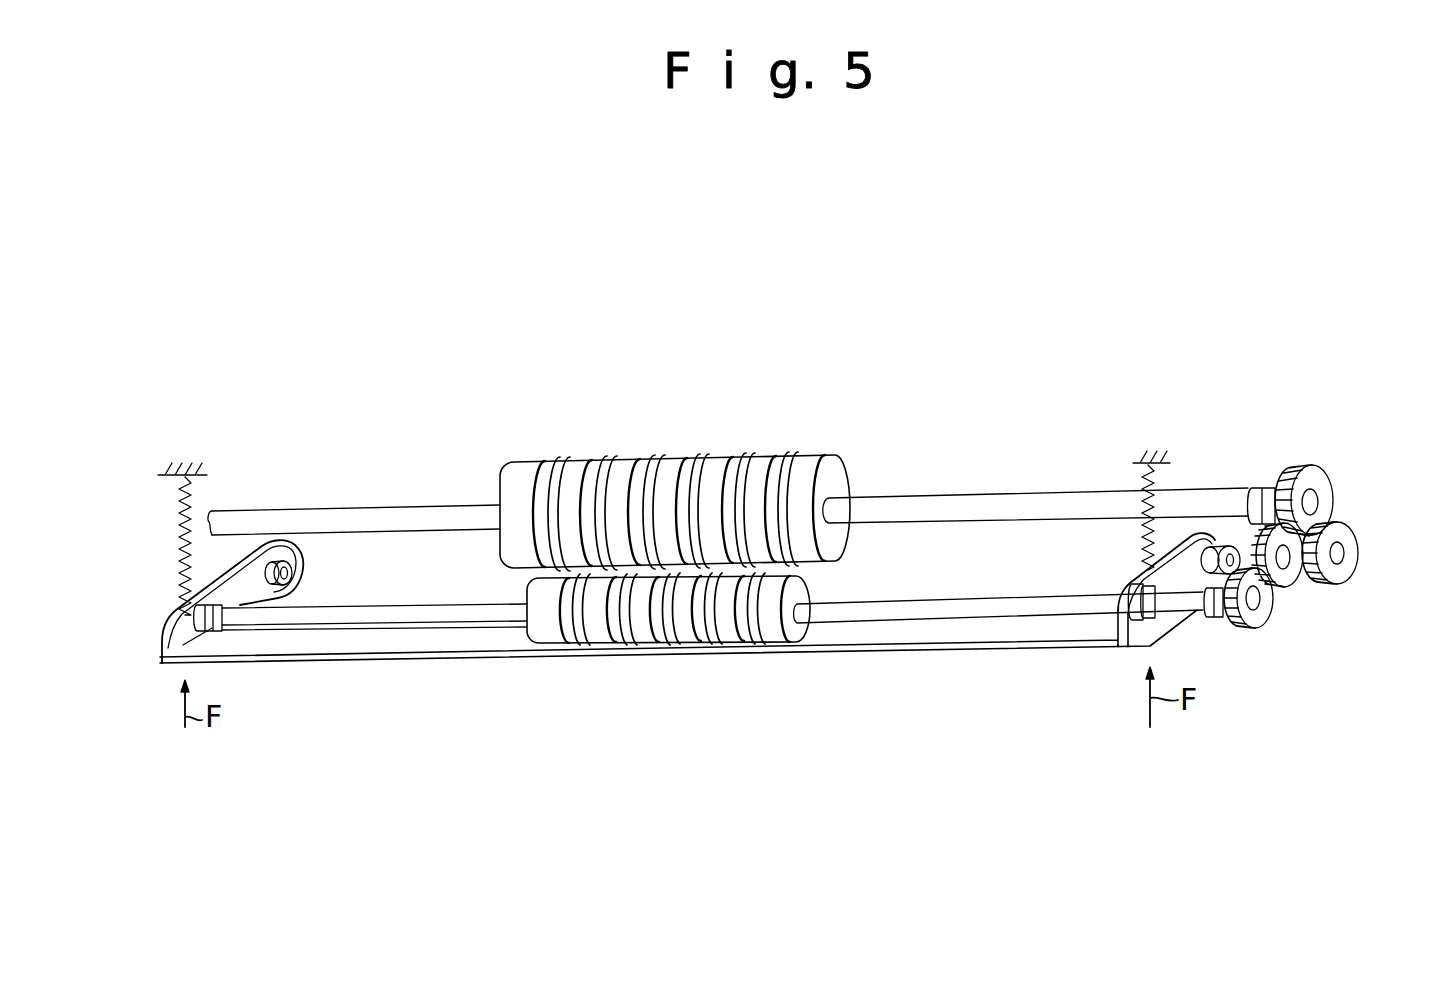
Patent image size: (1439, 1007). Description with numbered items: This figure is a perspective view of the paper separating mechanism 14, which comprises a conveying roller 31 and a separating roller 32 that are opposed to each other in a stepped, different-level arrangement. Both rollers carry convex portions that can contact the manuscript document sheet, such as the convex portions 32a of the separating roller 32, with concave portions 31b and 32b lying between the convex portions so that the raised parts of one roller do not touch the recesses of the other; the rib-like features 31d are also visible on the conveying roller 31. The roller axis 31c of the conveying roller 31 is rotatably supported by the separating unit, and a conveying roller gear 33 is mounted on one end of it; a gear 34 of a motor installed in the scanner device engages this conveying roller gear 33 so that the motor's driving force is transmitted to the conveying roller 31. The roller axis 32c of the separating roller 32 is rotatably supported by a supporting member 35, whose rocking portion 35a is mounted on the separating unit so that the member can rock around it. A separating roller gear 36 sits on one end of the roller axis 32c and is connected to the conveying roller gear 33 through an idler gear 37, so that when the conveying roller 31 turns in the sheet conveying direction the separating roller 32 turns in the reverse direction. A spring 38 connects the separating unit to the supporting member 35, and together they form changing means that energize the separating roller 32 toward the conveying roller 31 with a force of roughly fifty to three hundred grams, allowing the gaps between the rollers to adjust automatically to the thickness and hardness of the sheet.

The separating mechanism 14 is at (1210, 334).
The conveying roller 31 is at (689, 478).
The concave portions 31b is at (680, 460).
The roller axis 31c is at (945, 502).
The rib of feed roller 31d is at (738, 460).
The separating roller 32 is at (677, 650).
The convex portions 32a is at (698, 657).
The concave portions 32b is at (610, 655).
The roller axis 32c is at (953, 627).
The conveying roller gear 33 is at (1327, 468).
The gear of a motor 34 is at (1355, 565).
The supporting member 35 is at (1052, 650).
The rocking portion 35a is at (308, 562).
The separating roller gear 36 is at (1272, 627).
The idler gear 37 is at (1297, 584).
The spring 38 is at (178, 506).